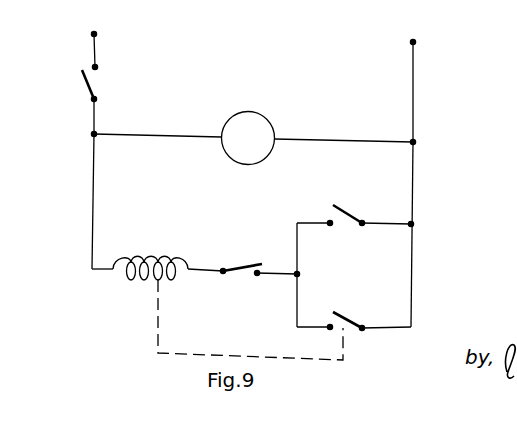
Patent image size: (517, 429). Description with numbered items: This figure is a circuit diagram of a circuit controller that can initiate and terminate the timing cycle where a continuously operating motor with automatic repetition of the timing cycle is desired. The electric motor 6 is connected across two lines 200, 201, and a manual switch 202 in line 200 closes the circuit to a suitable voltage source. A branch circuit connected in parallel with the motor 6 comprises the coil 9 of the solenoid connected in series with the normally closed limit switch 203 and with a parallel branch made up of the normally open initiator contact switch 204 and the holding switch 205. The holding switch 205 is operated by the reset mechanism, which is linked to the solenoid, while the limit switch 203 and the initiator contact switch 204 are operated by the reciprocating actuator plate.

The electric motor 6 is at (256, 124).
The coil 9 is at (127, 258).
The line 200 is at (94, 111).
The line 201 is at (413, 98).
The manual switch 202 is at (81, 81).
The normally closed limit switch 203 is at (245, 262).
The normally open initiator contact switch 204 is at (353, 193).
The holding switch 205 is at (347, 302).